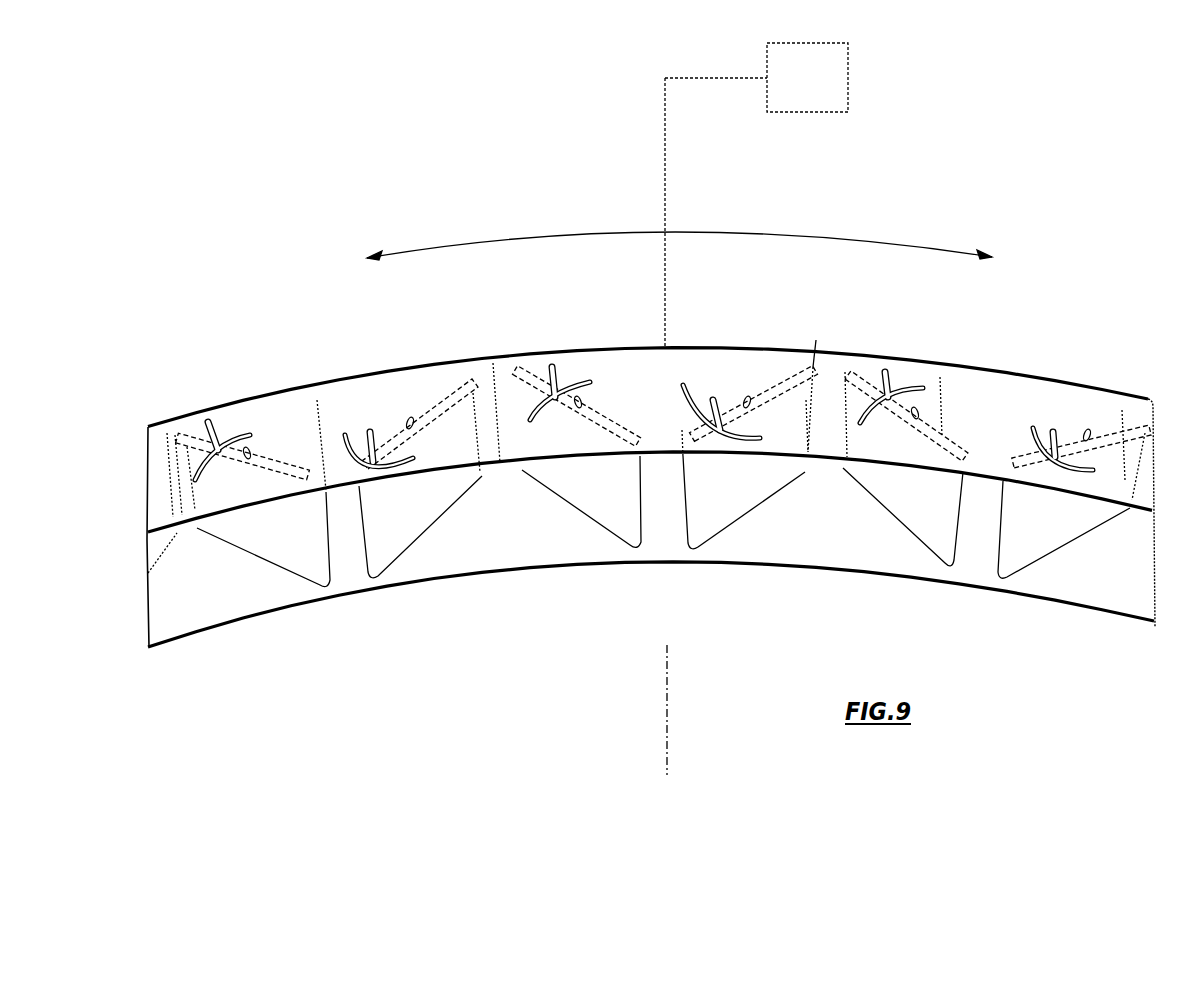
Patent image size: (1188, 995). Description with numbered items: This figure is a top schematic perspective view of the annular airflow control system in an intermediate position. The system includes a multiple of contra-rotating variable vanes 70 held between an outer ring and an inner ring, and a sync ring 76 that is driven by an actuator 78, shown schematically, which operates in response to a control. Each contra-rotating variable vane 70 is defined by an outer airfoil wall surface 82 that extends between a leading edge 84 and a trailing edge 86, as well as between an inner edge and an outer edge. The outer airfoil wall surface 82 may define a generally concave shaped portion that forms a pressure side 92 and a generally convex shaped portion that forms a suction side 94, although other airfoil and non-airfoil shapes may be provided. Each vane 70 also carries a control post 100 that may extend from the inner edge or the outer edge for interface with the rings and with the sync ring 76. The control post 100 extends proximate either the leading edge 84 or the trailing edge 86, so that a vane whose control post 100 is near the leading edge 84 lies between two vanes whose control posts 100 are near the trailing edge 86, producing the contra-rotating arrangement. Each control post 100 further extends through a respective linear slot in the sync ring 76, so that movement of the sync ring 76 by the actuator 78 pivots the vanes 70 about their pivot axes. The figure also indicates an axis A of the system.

The actuator 78 is at (807, 77).
The sync ring 76 is at (1017, 375).
The trailing edge 86 is at (816, 340).
The pressure side 92 is at (770, 388).
The suction side 94 is at (785, 398).
The control post 100 is at (690, 398).
The outer airfoil wall surface 82 is at (767, 477).
The contra-rotating variable vanes 70 is at (756, 527).
The leading edge 84 is at (690, 552).
The axis A is at (668, 710).